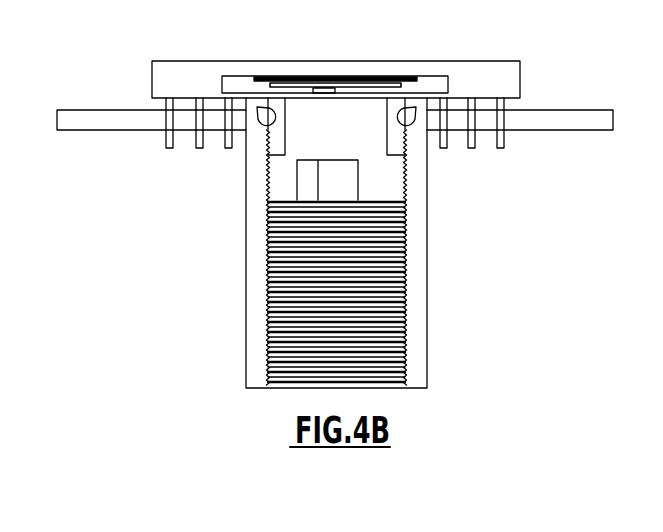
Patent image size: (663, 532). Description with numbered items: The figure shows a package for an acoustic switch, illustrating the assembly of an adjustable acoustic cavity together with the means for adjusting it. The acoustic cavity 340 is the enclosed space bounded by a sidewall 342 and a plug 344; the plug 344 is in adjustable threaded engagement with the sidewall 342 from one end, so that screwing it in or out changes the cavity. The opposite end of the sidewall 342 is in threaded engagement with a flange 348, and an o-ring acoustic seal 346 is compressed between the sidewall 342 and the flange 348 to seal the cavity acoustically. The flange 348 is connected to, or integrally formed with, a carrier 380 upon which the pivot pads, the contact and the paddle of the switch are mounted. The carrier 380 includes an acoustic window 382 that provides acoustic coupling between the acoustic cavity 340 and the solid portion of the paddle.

The acoustic cavity 340 is at (360, 130).
The sidewall 342 is at (253, 187).
The plug 344 is at (405, 235).
The o-ring acoustic seal 346 is at (264, 111).
The flange 348 is at (418, 107).
The carrier 380 is at (263, 61).
The acoustic window 382 is at (320, 92).